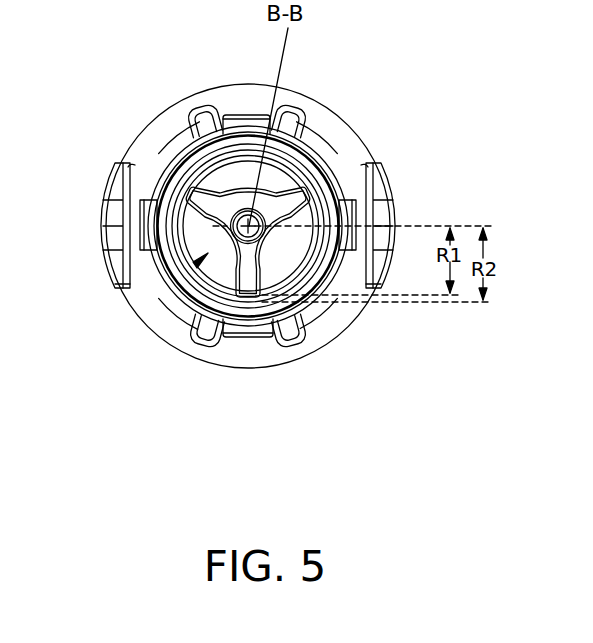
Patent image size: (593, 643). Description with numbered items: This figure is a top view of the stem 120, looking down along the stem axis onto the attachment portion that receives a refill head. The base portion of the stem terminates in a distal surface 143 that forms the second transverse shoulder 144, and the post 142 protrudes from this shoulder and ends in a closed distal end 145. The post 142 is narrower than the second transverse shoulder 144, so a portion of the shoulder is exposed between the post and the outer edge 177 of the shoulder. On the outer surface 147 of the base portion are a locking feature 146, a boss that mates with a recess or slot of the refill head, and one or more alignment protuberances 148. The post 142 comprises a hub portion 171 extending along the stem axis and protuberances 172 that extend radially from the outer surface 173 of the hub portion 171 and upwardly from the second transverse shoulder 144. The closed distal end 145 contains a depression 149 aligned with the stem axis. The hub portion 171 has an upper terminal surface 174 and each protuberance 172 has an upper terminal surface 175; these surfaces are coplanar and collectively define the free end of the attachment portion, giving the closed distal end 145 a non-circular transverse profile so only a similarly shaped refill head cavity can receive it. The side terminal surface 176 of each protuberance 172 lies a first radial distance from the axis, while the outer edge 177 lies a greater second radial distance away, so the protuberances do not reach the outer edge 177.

The stem 120 is at (428, 98).
The post 142 is at (146, 262).
The distal surface 143 is at (275, 178).
The second transverse shoulder 144 is at (297, 287).
The closed distal end 145 is at (300, 263).
The locking feature 146 is at (246, 114).
The outer surface 147 is at (187, 161).
The alignment protuberances 148 is at (147, 217).
The depression 149 is at (283, 332).
The hub portion 171 is at (235, 203).
The protuberance 172 is at (198, 197).
The outer surface 173 is at (378, 192).
The upper terminal surface 174 is at (196, 262).
The upper terminal surface 175 is at (222, 231).
The side terminal surface 176 is at (247, 294).
The outer edge 177 is at (312, 160).